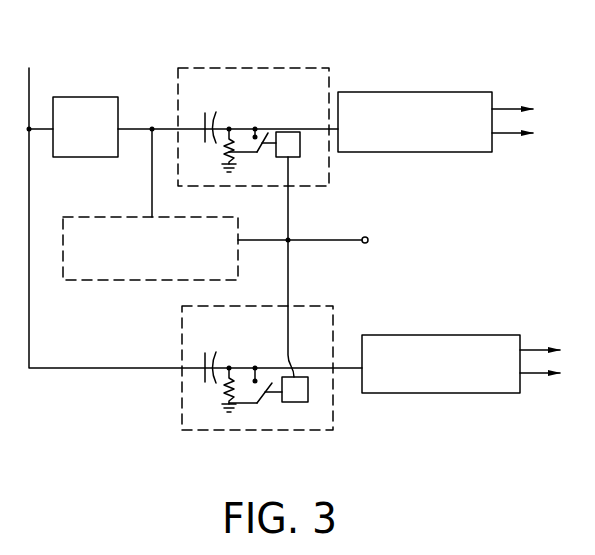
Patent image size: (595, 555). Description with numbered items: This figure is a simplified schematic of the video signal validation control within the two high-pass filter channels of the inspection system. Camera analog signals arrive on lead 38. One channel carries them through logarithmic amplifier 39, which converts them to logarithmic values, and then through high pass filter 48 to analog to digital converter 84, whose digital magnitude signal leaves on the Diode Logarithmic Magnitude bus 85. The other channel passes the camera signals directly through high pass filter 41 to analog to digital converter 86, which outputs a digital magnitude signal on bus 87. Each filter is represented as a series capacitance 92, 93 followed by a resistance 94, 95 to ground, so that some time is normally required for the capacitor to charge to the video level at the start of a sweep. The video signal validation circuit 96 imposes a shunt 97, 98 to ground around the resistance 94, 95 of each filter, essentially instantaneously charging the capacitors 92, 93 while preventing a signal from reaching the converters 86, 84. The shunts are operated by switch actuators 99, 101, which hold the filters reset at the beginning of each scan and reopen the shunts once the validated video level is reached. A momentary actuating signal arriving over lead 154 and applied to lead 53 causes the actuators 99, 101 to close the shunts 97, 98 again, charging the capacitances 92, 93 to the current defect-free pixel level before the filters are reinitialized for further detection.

The lead 38 is at (29, 203).
The logarithmic amplifier 39 is at (99, 97).
The high pass filter 41 is at (300, 305).
The high pass filter 48 is at (273, 67).
The lead 53 is at (288, 218).
The analog to digital converter 84 is at (405, 92).
The Diode Logarithmic Magnitude bus 85 is at (510, 108).
The analog to digital converter 86 is at (440, 335).
The bus 87 is at (535, 350).
The series capacitance 92 is at (205, 353).
The series capacitance 93 is at (205, 113).
The resistance 94 is at (234, 397).
The resistance 95 is at (232, 157).
The video signal validation circuit 96 is at (107, 281).
The shunt 97 is at (248, 403).
The shunt 98 is at (247, 163).
The switch actuator 99 is at (308, 390).
The switch actuator 101 is at (300, 144).
The lead 154 is at (363, 236).